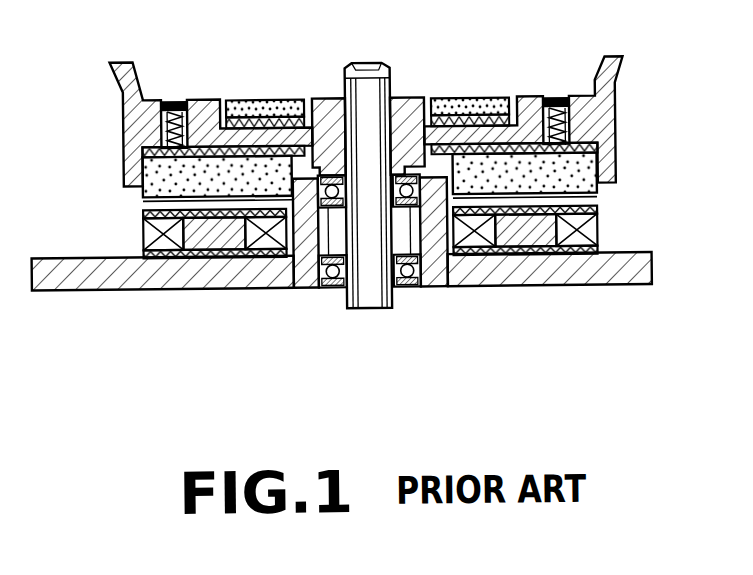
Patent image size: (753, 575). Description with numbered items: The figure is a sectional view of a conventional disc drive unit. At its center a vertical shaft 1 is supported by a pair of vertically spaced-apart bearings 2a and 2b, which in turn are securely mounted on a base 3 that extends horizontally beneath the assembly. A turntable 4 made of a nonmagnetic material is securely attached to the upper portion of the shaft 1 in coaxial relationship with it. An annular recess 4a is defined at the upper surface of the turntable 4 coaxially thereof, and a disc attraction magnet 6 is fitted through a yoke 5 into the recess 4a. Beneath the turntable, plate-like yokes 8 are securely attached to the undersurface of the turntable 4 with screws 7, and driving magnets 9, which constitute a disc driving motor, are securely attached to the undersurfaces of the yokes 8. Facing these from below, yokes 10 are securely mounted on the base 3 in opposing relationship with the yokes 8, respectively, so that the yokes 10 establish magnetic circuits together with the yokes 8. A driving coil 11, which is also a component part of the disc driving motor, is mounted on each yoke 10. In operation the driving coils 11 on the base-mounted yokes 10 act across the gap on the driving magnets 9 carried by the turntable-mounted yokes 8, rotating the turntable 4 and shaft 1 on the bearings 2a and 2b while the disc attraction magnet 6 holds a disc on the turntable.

The shaft 1 is at (392, 67).
The bearing 2a is at (416, 286).
The bearing 2b is at (317, 277).
The base 3 is at (249, 277).
The turntable 4 is at (608, 110).
The annular recess 4a is at (514, 123).
The yoke 5 is at (241, 104).
The disc attraction magnet 6 is at (282, 99).
The screw 7 is at (154, 130).
The plate-like yoke 8 is at (203, 146).
The driving magnet 9 is at (149, 198).
The yoke 10 is at (191, 256).
The driving coil 11 is at (146, 235).